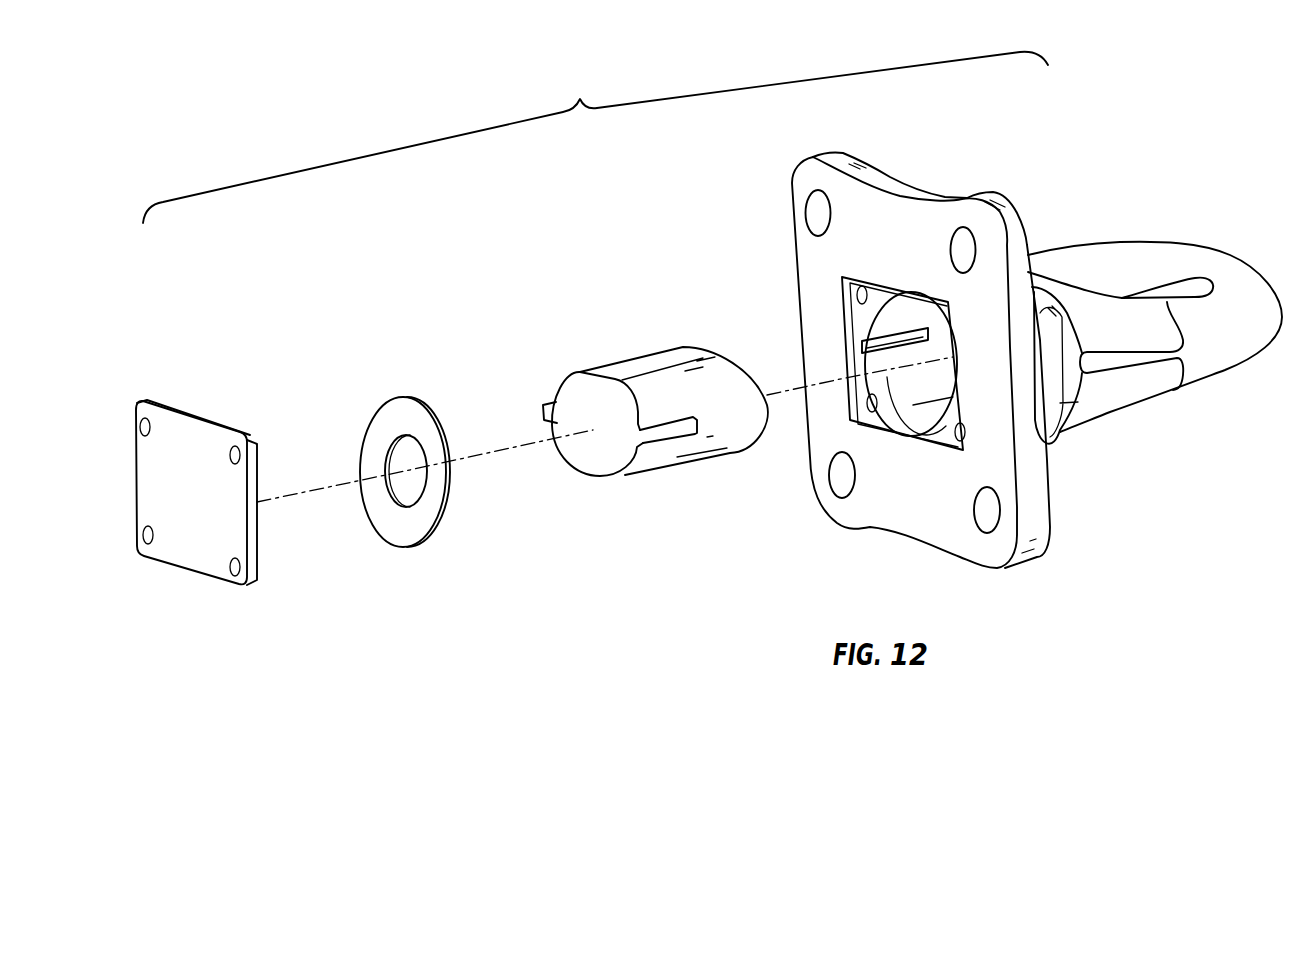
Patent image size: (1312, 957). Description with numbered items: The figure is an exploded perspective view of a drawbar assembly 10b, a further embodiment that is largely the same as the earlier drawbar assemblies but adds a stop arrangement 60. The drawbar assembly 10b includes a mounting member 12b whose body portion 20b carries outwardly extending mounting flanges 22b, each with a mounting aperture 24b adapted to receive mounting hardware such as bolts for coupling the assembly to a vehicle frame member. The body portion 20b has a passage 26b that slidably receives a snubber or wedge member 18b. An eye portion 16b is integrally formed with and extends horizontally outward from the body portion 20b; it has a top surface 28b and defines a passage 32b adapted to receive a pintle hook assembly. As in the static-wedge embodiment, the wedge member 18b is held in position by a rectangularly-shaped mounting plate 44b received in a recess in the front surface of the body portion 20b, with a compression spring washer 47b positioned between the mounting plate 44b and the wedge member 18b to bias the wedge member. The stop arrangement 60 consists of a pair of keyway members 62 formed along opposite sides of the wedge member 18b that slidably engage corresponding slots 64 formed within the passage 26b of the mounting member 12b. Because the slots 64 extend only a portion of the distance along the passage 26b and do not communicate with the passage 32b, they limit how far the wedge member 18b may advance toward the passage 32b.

The drawbar assembly 10b is at (595, 137).
The mounting member 12b is at (915, 340).
The eye portion 16b is at (1155, 327).
The wedge member 18b is at (693, 459).
The body portion 20b is at (795, 302).
The mounting flange 22b is at (962, 233).
The mounting aperture 24b is at (993, 190).
The passage 26b is at (927, 365).
The top surface 28b is at (1197, 257).
The passage 32b is at (1145, 409).
The mounting plate 44b is at (212, 420).
The compression spring washer 47b is at (410, 398).
The stop arrangement 60 is at (844, 366).
The keyway member 62 is at (657, 438).
The slot 64 is at (893, 342).